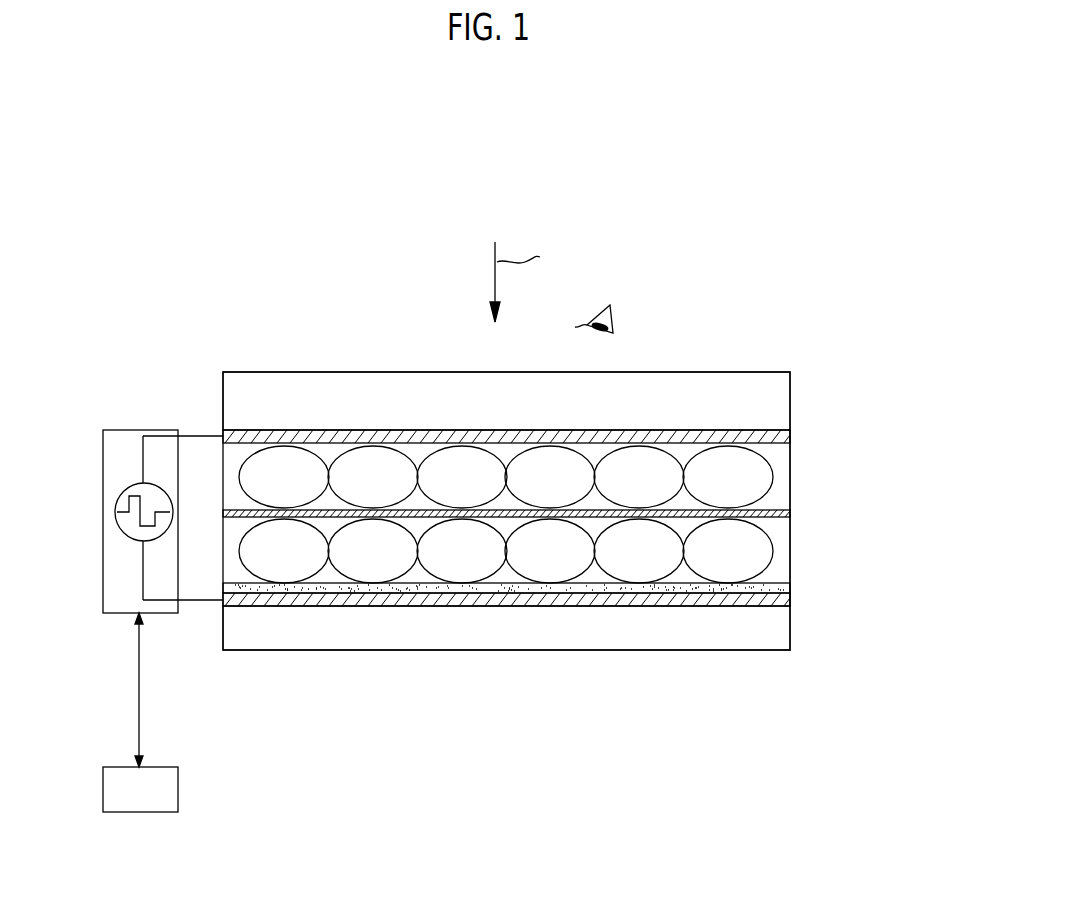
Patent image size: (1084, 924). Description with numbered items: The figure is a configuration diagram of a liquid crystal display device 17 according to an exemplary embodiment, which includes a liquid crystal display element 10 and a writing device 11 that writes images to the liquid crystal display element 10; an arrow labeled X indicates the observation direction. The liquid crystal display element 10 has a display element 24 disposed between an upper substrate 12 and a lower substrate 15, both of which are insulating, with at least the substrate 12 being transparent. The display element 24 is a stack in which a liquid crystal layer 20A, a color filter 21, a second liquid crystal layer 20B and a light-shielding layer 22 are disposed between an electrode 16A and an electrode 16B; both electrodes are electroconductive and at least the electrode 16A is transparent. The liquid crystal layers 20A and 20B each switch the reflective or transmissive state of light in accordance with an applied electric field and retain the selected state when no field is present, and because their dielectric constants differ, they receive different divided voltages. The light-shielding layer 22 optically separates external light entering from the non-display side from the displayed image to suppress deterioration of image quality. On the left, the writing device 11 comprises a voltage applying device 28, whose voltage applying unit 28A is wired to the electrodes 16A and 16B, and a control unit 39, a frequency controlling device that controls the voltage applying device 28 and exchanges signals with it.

The liquid crystal display element 10 is at (777, 366).
The writing device 11 is at (104, 368).
The substrate 12 is at (777, 401).
The substrate 15 is at (777, 625).
The electrode 16A is at (790, 437).
The electrode 16B is at (790, 598).
The liquid crystal display device 17 is at (728, 251).
The liquid crystal layer 20A is at (807, 475).
The liquid crystal layer 20B is at (808, 551).
The color filter 21 is at (790, 513).
The light-shielding layer 22 is at (790, 588).
The display element 24 is at (905, 422).
The voltage applying device 28 is at (143, 423).
The voltage applying unit 28A is at (114, 512).
The control unit 39 is at (135, 812).